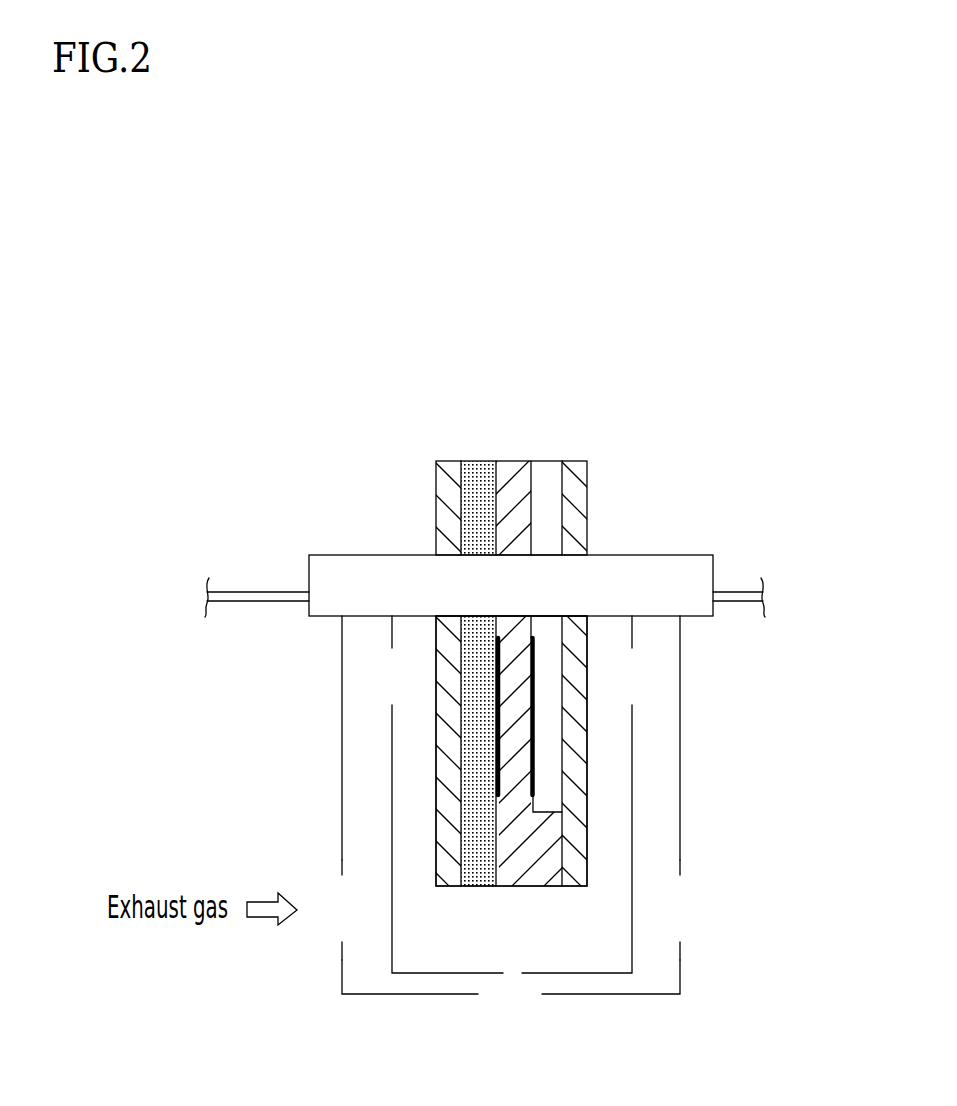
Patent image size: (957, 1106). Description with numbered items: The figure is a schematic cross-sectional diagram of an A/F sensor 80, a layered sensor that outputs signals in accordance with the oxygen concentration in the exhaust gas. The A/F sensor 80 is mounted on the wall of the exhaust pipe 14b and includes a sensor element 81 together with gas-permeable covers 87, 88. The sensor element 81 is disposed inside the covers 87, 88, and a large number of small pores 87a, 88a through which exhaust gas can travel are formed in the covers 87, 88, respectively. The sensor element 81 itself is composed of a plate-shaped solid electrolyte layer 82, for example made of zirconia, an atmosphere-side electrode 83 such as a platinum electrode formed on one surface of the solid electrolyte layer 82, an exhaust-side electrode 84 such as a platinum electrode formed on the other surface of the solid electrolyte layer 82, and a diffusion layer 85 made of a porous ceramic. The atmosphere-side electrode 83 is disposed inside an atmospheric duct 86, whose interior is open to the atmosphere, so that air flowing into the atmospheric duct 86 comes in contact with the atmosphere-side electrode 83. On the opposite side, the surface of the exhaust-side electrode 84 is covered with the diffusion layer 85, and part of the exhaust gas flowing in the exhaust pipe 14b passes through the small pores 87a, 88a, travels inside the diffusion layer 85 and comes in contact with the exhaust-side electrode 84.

The exhaust pipe 14b is at (280, 602).
The A/F sensor 80 is at (632, 460).
The sensor element 81 is at (478, 910).
The solid electrolyte layer 82 is at (513, 673).
The atmosphere-side electrode 83 is at (533, 777).
The exhaust-side electrode 84 is at (497, 773).
The diffusion layer 85 is at (470, 752).
The atmospheric duct 86 is at (548, 655).
The cover 87 is at (392, 852).
The small pores 87a is at (392, 680).
The cover 88 is at (342, 674).
The small pores 88a is at (345, 917).